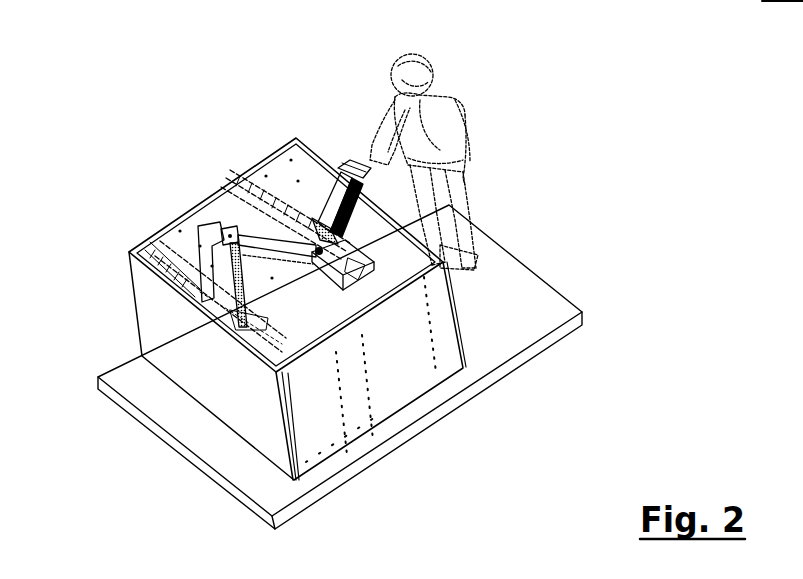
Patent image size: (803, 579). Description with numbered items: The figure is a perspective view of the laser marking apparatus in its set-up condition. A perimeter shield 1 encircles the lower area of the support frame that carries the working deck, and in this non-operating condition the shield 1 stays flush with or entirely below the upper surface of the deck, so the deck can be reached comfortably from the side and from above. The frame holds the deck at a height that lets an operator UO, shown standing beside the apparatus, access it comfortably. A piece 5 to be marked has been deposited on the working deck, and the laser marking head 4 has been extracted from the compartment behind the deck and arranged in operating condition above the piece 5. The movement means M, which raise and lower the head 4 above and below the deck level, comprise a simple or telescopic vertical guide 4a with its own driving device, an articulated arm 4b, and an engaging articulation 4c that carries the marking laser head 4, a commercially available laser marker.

The perimeter shield 1 is at (402, 398).
The movement means M is at (190, 219).
The laser marking head 4 is at (348, 183).
The vertical guide 4a is at (212, 257).
The articulated arm 4b is at (226, 238).
The engaging articulation 4c is at (318, 251).
The piece to be marked 5 is at (343, 258).
The operator UO is at (462, 66).